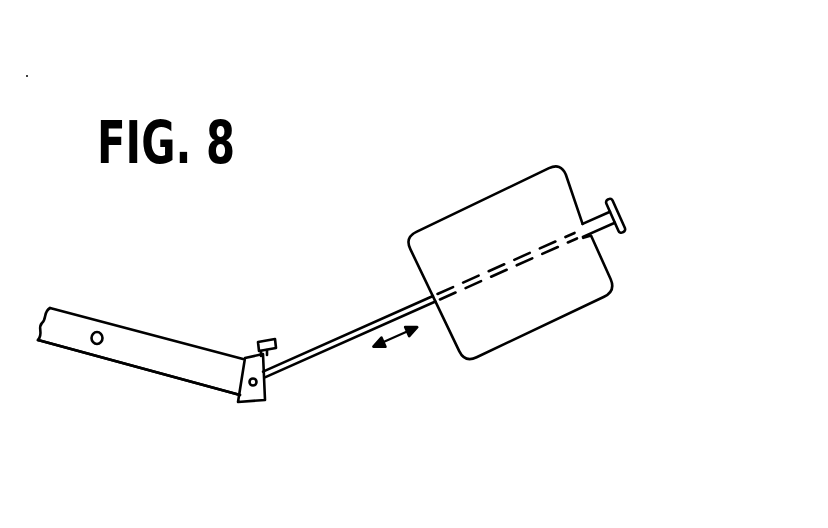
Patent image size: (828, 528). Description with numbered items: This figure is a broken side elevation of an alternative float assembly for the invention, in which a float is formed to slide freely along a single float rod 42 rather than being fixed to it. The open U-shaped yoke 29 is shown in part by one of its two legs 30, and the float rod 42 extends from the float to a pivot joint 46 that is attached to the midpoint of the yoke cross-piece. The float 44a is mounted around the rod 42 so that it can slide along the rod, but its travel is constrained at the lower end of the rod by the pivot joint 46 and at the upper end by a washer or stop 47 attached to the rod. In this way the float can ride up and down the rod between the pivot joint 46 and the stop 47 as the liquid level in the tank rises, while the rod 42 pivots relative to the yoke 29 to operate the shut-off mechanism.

The yoke 29 is at (162, 374).
The yoke leg 30 is at (141, 330).
The float rod 42 is at (323, 343).
The generally cylindrical float 44a is at (510, 341).
The pivot joint 46 is at (261, 404).
The washer or stop 47 is at (626, 228).